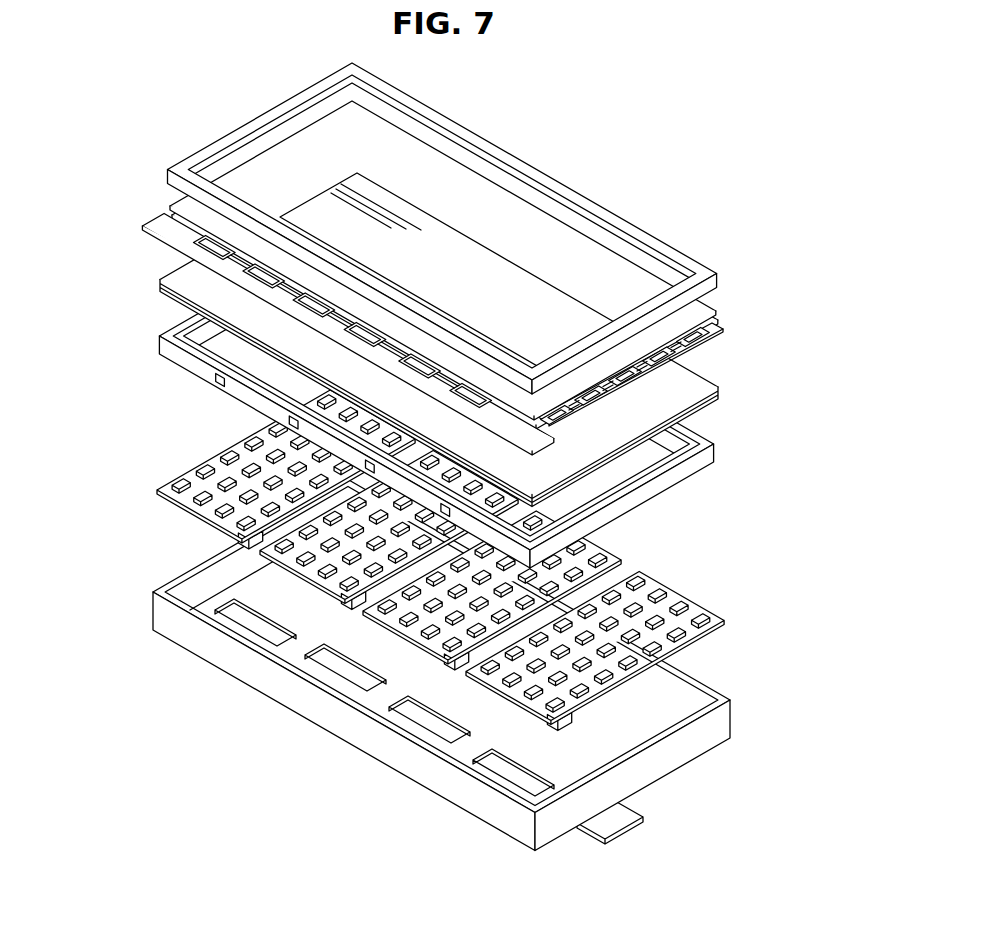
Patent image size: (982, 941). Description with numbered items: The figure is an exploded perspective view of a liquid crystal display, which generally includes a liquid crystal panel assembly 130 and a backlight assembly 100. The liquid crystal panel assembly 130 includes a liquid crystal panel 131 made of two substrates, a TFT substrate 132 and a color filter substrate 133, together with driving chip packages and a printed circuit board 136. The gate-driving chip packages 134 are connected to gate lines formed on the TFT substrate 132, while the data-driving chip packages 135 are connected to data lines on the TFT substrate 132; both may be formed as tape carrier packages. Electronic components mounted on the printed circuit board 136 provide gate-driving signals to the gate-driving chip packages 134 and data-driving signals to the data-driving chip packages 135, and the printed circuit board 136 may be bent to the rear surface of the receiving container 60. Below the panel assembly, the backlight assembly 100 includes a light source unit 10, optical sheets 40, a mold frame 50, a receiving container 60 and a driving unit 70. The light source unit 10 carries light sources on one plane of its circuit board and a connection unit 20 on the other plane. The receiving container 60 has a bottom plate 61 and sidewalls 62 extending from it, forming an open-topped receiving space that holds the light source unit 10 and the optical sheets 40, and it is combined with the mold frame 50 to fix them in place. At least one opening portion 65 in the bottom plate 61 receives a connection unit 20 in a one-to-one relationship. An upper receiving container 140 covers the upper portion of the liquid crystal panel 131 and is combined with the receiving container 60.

The backlight assembly 100 is at (468, 475).
The upper receiving container 140 is at (469, 228).
The liquid crystal panel assembly 130 is at (449, 278).
The liquid crystal panel 131 is at (490, 265).
The color filter substrate 133 is at (698, 305).
The TFT substrate 132 is at (717, 320).
The gate-driving chip packages 134 is at (713, 333).
The data-driving chip packages 135 is at (203, 228).
The printed circuit board 136 is at (321, 304).
The optical sheets 40 is at (710, 375).
The mold frame 50 is at (728, 448).
The light source unit 10 is at (704, 574).
The connection unit 20 is at (575, 717).
The receiving container 60 is at (472, 684).
The bottom plate 61 is at (548, 765).
The sidewalls 62 is at (690, 750).
The opening portion 65 is at (420, 722).
The driving unit 70 is at (622, 818).